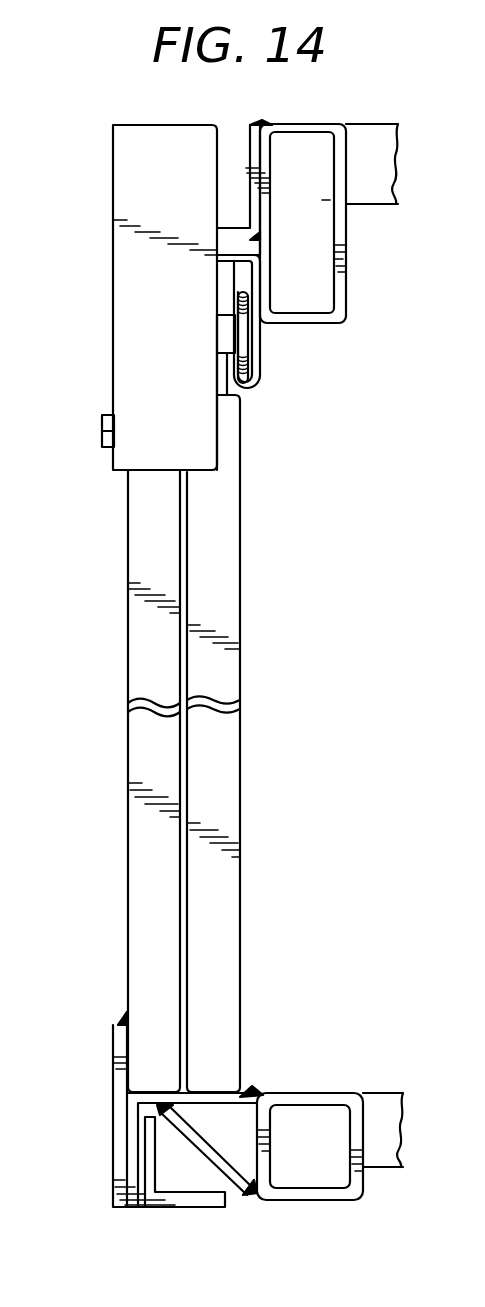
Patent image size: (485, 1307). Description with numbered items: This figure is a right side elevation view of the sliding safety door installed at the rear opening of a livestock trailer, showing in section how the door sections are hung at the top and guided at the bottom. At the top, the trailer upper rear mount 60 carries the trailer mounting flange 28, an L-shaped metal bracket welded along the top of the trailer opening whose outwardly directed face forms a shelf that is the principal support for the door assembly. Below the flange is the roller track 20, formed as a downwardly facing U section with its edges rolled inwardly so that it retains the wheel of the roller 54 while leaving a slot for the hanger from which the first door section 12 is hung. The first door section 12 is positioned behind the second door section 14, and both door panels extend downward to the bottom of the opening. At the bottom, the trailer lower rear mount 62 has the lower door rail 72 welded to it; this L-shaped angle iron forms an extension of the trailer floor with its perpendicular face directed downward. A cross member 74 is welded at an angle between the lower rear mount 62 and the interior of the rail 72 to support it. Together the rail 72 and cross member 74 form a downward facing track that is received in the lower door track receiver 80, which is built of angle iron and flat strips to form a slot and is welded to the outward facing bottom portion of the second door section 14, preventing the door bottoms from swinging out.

The first and left door section 12 is at (232, 611).
The second and right door section 14 is at (140, 622).
The roller track 20 is at (247, 386).
The trailer mounting flange 28 is at (245, 126).
The roller 54 is at (243, 358).
The trailer upper rear mount 60 is at (323, 328).
The trailer lower rear mount 62 is at (337, 1093).
The lower door rail 72 is at (238, 1100).
The cross members 74 is at (243, 1184).
The lower door track receiver 80 is at (113, 1166).